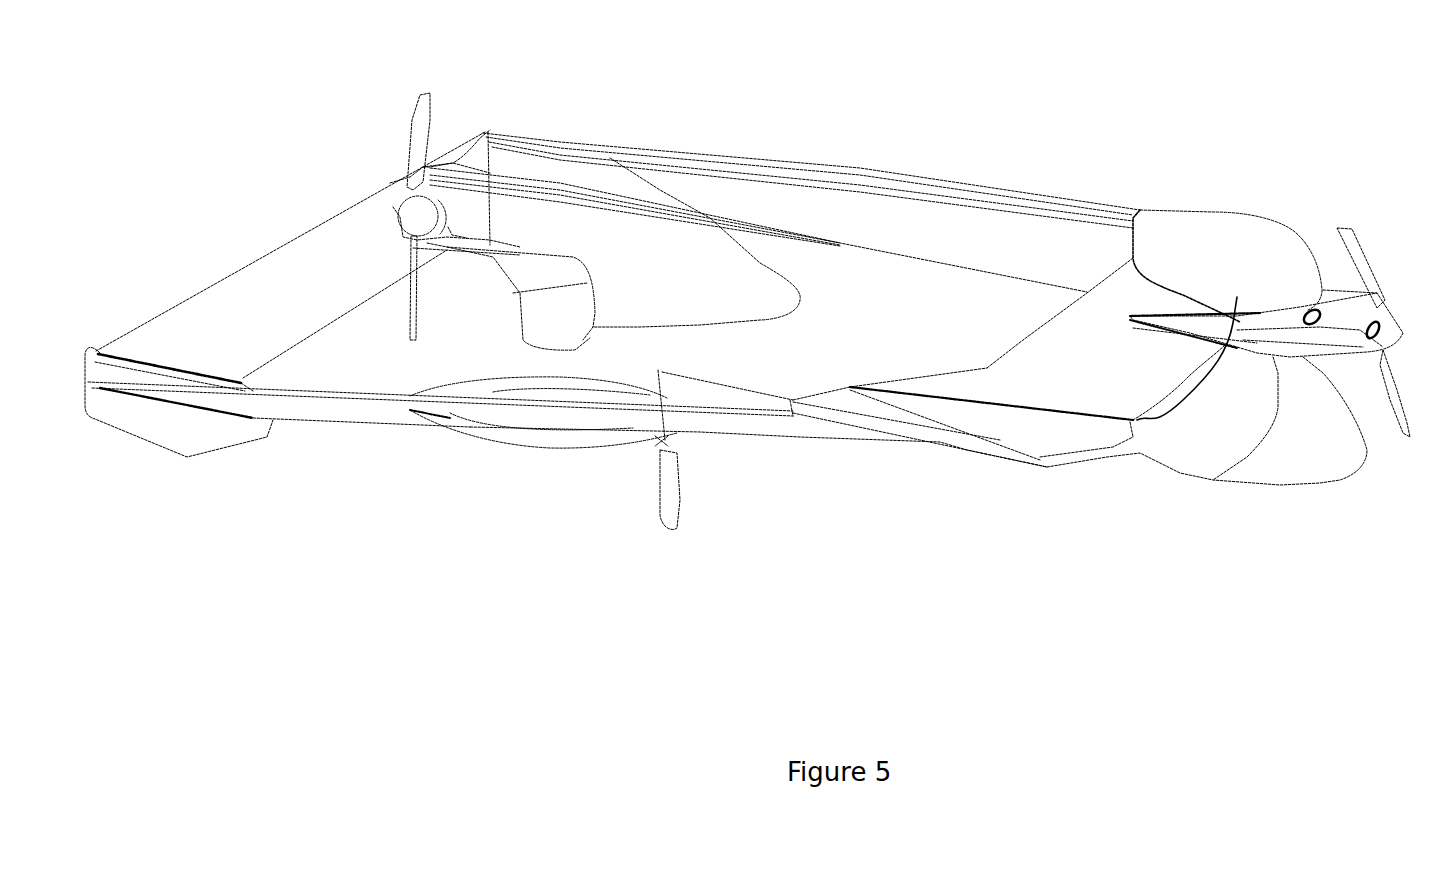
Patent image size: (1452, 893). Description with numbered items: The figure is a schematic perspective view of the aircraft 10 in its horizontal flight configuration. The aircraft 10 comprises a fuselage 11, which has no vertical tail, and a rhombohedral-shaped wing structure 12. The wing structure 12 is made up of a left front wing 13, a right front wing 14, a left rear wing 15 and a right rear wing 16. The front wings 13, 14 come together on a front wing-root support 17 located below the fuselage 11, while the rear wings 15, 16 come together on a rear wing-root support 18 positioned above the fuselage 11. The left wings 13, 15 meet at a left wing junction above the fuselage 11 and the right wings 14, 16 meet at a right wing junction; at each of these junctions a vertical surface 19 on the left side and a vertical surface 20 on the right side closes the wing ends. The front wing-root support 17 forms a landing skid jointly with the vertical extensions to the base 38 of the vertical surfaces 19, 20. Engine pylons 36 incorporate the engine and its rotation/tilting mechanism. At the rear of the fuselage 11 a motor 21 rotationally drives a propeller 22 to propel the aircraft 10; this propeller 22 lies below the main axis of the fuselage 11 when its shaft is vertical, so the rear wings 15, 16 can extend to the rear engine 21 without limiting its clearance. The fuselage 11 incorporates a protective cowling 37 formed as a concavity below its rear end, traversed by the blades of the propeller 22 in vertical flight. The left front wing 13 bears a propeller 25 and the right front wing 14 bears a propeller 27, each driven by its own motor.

The aircraft 10 is at (1212, 610).
The fuselage 11 is at (1178, 448).
The wing structure 12 is at (993, 123).
The left front wing 13 is at (343, 400).
The right front wing 14 is at (1088, 390).
The left rear wing 15 is at (217, 298).
The right rear wing 16 is at (903, 180).
The front wing-root support 17 is at (987, 423).
The rear wing-root support 18 is at (563, 142).
The vertical surface 19 is at (181, 424).
The vertical surface 20 is at (1223, 227).
The motor 21 is at (448, 227).
The propeller 22 is at (423, 217).
The propeller 25 is at (667, 517).
The propeller 27 is at (1393, 413).
The engine pylon 36 is at (1248, 333).
The protective cowling 37 is at (503, 287).
The vertical extension to the base 38 is at (1137, 420).